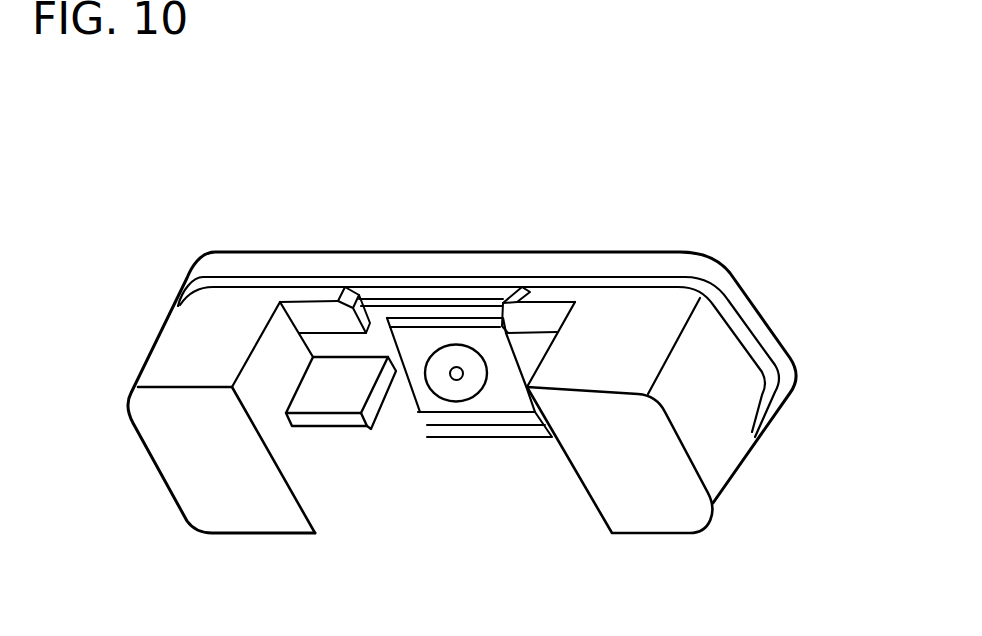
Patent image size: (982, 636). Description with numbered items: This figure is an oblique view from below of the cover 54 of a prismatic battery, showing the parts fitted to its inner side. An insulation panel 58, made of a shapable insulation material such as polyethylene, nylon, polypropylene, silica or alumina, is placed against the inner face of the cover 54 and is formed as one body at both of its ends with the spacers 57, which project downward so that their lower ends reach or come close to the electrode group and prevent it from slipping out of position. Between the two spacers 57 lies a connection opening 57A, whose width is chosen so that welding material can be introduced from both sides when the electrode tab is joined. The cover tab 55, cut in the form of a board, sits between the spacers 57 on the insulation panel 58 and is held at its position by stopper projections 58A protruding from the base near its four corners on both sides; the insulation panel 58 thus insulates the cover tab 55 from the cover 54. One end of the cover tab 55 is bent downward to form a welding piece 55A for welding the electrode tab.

The cover 54 is at (290, 266).
The cover tab 55 is at (447, 410).
The welding piece 55A is at (349, 403).
The spacer 57 is at (228, 515).
The connection opening 57A is at (525, 488).
The insulation panel 58 is at (450, 300).
The stopper projection 58A is at (556, 308).